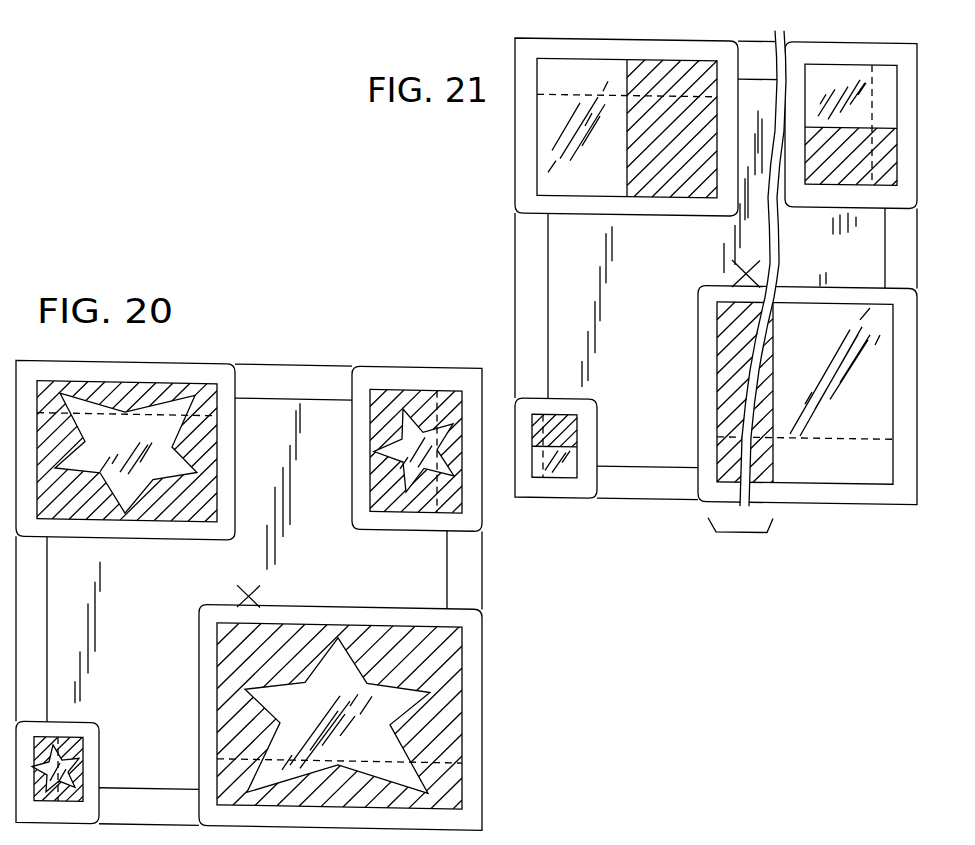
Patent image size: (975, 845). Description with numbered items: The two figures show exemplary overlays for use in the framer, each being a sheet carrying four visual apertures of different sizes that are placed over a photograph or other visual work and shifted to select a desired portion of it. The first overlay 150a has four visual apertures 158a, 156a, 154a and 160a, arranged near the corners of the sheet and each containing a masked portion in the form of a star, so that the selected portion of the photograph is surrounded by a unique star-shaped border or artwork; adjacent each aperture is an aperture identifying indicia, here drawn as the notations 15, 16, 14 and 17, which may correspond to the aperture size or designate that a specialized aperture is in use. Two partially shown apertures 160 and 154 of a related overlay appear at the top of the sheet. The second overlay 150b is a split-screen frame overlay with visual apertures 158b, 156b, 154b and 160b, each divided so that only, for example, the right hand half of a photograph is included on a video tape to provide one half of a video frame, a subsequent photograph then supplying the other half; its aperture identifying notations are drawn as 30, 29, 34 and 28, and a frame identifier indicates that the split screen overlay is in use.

In FIG. 20, the overlay 150a is at (273, 375).
In FIG. 20, the visual aperture 158a is at (178, 405).
In FIG. 20, the visual aperture 156a is at (410, 413).
In FIG. 20, the visual aperture 154a is at (405, 690).
In FIG. 20, the visual aperture 160a is at (65, 774).
In FIG. 20, the lower right panel position 14 is at (340, 717).
In FIG. 20, the upper left panel position 15 is at (125, 450).
In FIG. 20, the upper right panel position 16 is at (417, 448).
In FIG. 20, the lower left panel position 17 is at (57, 772).
In FIG. 20, the transparent visual aperture 160 is at (78, 0).
In FIG. 20, the transparent visual aperture 154 is at (333, 0).
In FIG. 21, the frame overlay 150b is at (530, 262).
In FIG. 21, the visual aperture 158b is at (590, 71).
In FIG. 21, the visual aperture 156b is at (843, 73).
In FIG. 21, the visual aperture 154b is at (823, 468).
In FIG. 21, the visual aperture 160b is at (558, 464).
In FIG. 21, the lower left panel position 28 is at (556, 448).
In FIG. 21, the upper right panel position 29 is at (851, 125).
In FIG. 21, the upper left panel position 30 is at (626, 127).
In FIG. 21, the lower right panel position 34 is at (807, 395).